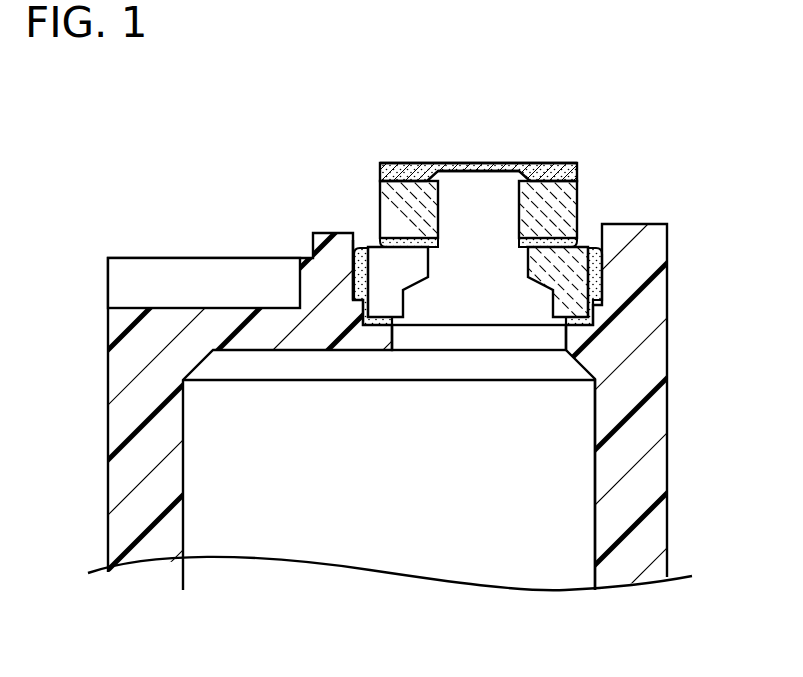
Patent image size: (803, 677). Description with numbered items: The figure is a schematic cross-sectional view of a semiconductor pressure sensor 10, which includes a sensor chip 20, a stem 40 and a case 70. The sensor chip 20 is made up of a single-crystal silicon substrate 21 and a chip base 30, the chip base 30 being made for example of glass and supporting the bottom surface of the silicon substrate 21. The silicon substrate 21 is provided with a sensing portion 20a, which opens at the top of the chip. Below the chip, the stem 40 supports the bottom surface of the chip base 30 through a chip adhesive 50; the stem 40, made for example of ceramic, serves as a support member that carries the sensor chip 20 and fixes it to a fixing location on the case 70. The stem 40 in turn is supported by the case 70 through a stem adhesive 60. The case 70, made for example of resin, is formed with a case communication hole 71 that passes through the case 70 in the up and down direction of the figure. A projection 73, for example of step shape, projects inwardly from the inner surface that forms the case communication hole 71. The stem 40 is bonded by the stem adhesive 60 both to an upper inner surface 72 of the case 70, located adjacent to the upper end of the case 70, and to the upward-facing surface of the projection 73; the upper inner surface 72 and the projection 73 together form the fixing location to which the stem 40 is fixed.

The pressure sensor 10 is at (576, 100).
The sensor chip 20 is at (534, 150).
The sensing portion 20a is at (486, 152).
The single-crystal silicon substrate 21 is at (578, 174).
The chip base 30 is at (578, 207).
The stem 40 is at (576, 265).
The chip adhesive 50 is at (374, 242).
The stem adhesive 60 is at (589, 292).
The case 70 is at (668, 405).
The case communication hole 71 is at (597, 480).
The upper inner surface 72 is at (353, 288).
The projection 73 is at (567, 345).